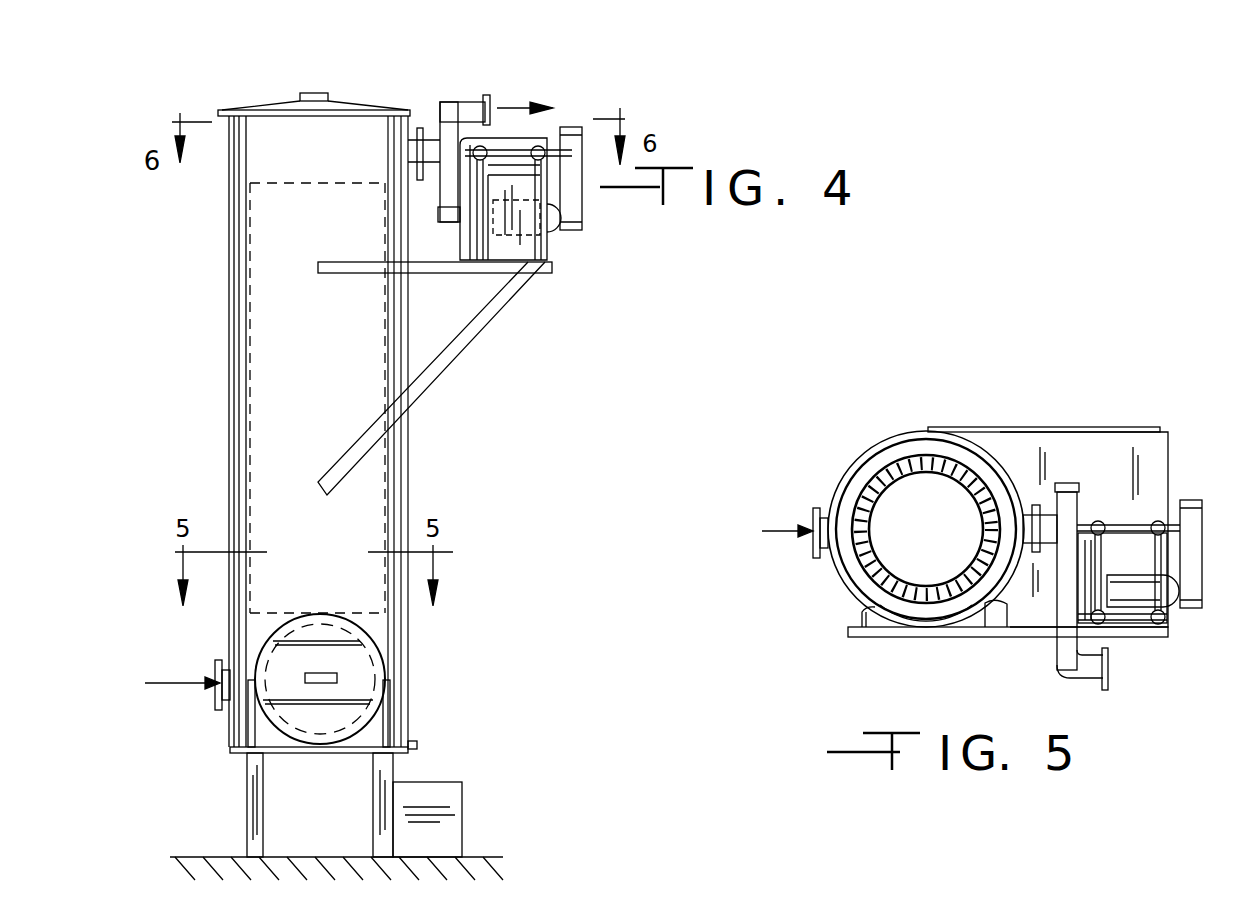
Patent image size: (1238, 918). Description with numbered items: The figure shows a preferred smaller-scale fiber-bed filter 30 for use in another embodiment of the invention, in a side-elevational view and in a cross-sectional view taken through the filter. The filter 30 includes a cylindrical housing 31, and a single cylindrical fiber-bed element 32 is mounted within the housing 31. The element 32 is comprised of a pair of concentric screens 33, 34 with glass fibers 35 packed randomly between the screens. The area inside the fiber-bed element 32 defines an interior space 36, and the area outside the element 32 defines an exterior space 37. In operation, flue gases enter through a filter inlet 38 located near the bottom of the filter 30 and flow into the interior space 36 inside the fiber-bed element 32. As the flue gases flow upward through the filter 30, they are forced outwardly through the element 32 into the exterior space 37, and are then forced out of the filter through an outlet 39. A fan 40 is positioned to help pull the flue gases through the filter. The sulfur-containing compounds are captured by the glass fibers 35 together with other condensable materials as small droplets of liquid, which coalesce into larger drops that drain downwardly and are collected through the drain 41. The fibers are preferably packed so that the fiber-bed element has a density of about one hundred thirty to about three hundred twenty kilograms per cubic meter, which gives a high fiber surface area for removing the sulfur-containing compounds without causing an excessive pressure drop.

In FIG. 4, the fiber-bed filter 30 is at (138, 280).
In FIG. 5, the fiber-bed filter 30 is at (1118, 330).
In FIG. 4, the cylindrical housing 31 is at (408, 476).
In FIG. 5, the cylindrical housing 31 is at (1000, 625).
In FIG. 4, the fiber-bed element 32 is at (240, 393).
In FIG. 5, the fiber-bed element 32 is at (890, 445).
In FIG. 5, the screen 33 is at (928, 472).
In FIG. 5, the screen 34 is at (972, 470).
In FIG. 5, the glass fibers 35 is at (866, 478).
In FIG. 5, the interior space 36 is at (890, 546).
In FIG. 5, the exterior space 37 is at (905, 606).
In FIG. 4, the filter inlet 38 is at (165, 681).
In FIG. 5, the filter inlet 38 is at (818, 548).
In FIG. 4, the outlet 39 is at (403, 156).
In FIG. 4, the fan 40 is at (585, 105).
In FIG. 5, the fan 40 is at (1112, 586).
In FIG. 4, the drain 41 is at (417, 742).